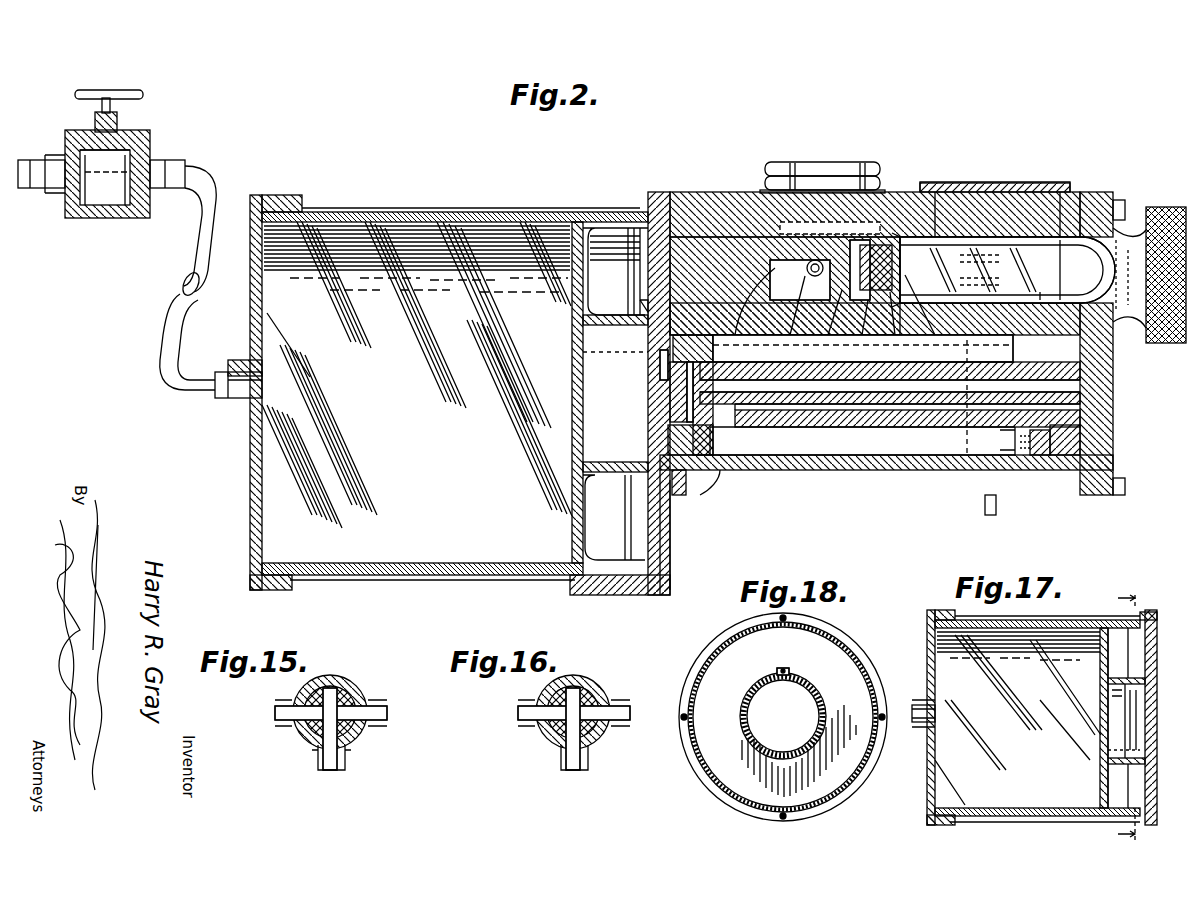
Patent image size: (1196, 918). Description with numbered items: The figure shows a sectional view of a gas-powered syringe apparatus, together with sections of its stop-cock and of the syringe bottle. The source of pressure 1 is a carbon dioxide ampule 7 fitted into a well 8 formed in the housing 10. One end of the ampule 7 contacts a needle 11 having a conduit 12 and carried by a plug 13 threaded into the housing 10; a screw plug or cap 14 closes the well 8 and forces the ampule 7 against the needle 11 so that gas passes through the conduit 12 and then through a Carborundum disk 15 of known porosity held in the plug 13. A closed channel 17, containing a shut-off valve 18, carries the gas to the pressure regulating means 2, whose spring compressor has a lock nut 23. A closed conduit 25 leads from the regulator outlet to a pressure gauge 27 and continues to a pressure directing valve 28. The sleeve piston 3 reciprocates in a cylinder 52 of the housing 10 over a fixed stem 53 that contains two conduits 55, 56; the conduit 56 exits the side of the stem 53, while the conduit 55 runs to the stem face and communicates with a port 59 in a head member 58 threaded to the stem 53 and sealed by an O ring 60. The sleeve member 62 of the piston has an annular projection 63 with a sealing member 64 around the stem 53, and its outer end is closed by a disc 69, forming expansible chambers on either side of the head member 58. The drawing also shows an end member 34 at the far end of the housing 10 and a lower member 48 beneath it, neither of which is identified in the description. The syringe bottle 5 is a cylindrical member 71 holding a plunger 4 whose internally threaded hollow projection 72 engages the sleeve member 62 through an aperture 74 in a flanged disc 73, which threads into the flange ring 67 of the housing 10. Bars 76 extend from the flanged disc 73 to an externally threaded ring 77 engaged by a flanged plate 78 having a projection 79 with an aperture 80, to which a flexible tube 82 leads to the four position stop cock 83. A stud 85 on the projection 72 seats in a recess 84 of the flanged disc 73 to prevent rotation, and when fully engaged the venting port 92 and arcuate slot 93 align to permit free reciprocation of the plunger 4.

In FIG. 2, the source of pressure 1 is at (910, 230).
In FIG. 2, the pressure regulating means 2 is at (800, 150).
In FIG. 2, the sleeve piston 3 is at (856, 470).
In FIG. 2, the plunger 4 is at (574, 354).
In FIG. 17, the plunger 4 is at (1094, 754).
In FIG. 2, the syringe bottle 5 is at (434, 207).
In FIG. 18, the syringe bottle 5 is at (695, 760).
In FIG. 17, the syringe bottle 5 is at (919, 799).
In FIG. 2, the carbon dioxide ampule 7 is at (990, 248).
In FIG. 2, the well 8 is at (1062, 240).
In FIG. 2, the housing 10 is at (700, 195).
In FIG. 2, the needle 11 is at (931, 318).
In FIG. 2, the conduit 12 is at (902, 326).
In FIG. 2, the plug 13 is at (866, 330).
In FIG. 2, the screw plug or cap 14 is at (1145, 225).
In FIG. 2, the Carborundum disk 15 is at (30, 185).
In FIG. 2, the conduit or closed channel 17 is at (798, 318).
In FIG. 2, the shut-off valve 18 is at (755, 314).
In FIG. 17, the shut-off valve 18 is at (1113, 704).
In FIG. 2, the lock nut 23 is at (825, 163).
In FIG. 2, the closed conduit 25 is at (885, 240).
In FIG. 2, the pressure gauge 27 is at (1030, 183).
In FIG. 2, the pressure directing valve 28 is at (965, 470).
In FIG. 2, the end wall 34 is at (1130, 483).
In FIG. 2, the nozzle 48 is at (996, 508).
In FIG. 2, the cylinder 52 is at (824, 474).
In FIG. 2, the fixed piston or stem 53 is at (922, 455).
In FIG. 2, the conduit or port 55 is at (792, 418).
In FIG. 2, the conduit or port 56 is at (838, 410).
In FIG. 2, the head member 58 is at (660, 440).
In FIG. 2, the port 59 is at (687, 372).
In FIG. 2, the O ring 60 is at (705, 470).
In FIG. 2, the cylindrical sleeve member 62 is at (760, 470).
In FIG. 2, the annular projection 63 is at (1032, 456).
In FIG. 2, the sealing member 64 is at (1060, 456).
In FIG. 2, the flange ring 67 is at (615, 592).
In FIG. 2, the disc 69 is at (660, 402).
In FIG. 2, the cylindrical member 71 is at (388, 212).
In FIG. 18, the cylindrical member 71 is at (860, 648).
In FIG. 17, the cylindrical member 71 is at (1010, 812).
In FIG. 2, the hollow projection 72 is at (610, 478).
In FIG. 18, the hollow projection 72 is at (742, 704).
In FIG. 17, the hollow projection 72 is at (1108, 668).
In FIG. 2, the flanged disc 73 is at (660, 192).
In FIG. 18, the flanged disc 73 is at (718, 642).
In FIG. 17, the flanged disc 73 is at (1108, 795).
In FIG. 2, the aperture 74 is at (632, 520).
In FIG. 17, the aperture 74 is at (1108, 778).
In FIG. 2, the bars 76 is at (482, 210).
In FIG. 18, the bars 76 is at (778, 617).
In FIG. 17, the bars 76 is at (1062, 620).
In FIG. 2, the externally threaded ring 77 is at (300, 195).
In FIG. 17, the externally threaded ring 77 is at (952, 618).
In FIG. 2, the flanged plate 78 is at (252, 305).
In FIG. 17, the flanged plate 78 is at (928, 632).
In FIG. 2, the externally threaded projection 79 is at (238, 366).
In FIG. 17, the externally threaded projection 79 is at (920, 725).
In FIG. 2, the aperture 80 is at (262, 395).
In FIG. 17, the aperture 80 is at (935, 715).
In FIG. 2, the flexible tube 82 is at (170, 318).
In FIG. 2, the four position stop cock 83 is at (108, 222).
In FIG. 15, the four position stop cock 83 is at (361, 689).
In FIG. 16, the four position stop cock 83 is at (540, 730).
In FIG. 2, the recess 84 is at (640, 272).
In FIG. 18, the recess 84 is at (777, 670).
In FIG. 17, the recess 84 is at (1110, 696).
In FIG. 2, the stud 85 is at (640, 302).
In FIG. 18, the stud 85 is at (788, 669).
In FIG. 17, the stud 85 is at (1112, 700).
In FIG. 2, the venting port 92 is at (672, 524).
In FIG. 2, the arcuate slot 93 is at (690, 488).